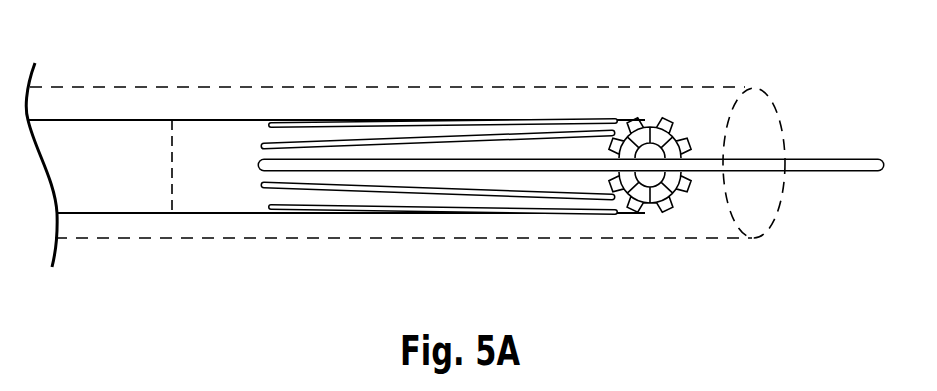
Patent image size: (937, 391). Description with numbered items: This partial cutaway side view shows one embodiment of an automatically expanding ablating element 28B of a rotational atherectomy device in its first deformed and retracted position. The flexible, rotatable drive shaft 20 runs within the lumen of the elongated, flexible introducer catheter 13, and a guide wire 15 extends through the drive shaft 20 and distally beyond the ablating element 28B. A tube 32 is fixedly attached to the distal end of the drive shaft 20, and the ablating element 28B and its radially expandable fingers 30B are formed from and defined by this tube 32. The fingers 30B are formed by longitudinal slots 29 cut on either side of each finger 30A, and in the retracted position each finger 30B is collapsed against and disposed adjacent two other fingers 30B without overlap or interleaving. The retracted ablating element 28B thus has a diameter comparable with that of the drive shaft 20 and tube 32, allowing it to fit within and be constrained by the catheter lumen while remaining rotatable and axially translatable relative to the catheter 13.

The introducer catheter 13 is at (315, 87).
The drive shaft 20 is at (83, 118).
The tube 32 is at (183, 123).
The automatically expanding ablating element 28B is at (547, 120).
The longitudinal slots 29 is at (505, 192).
The radially expandable fingers 30B is at (688, 150).
The finger 30A is at (688, 180).
The guide wire 15 is at (785, 150).